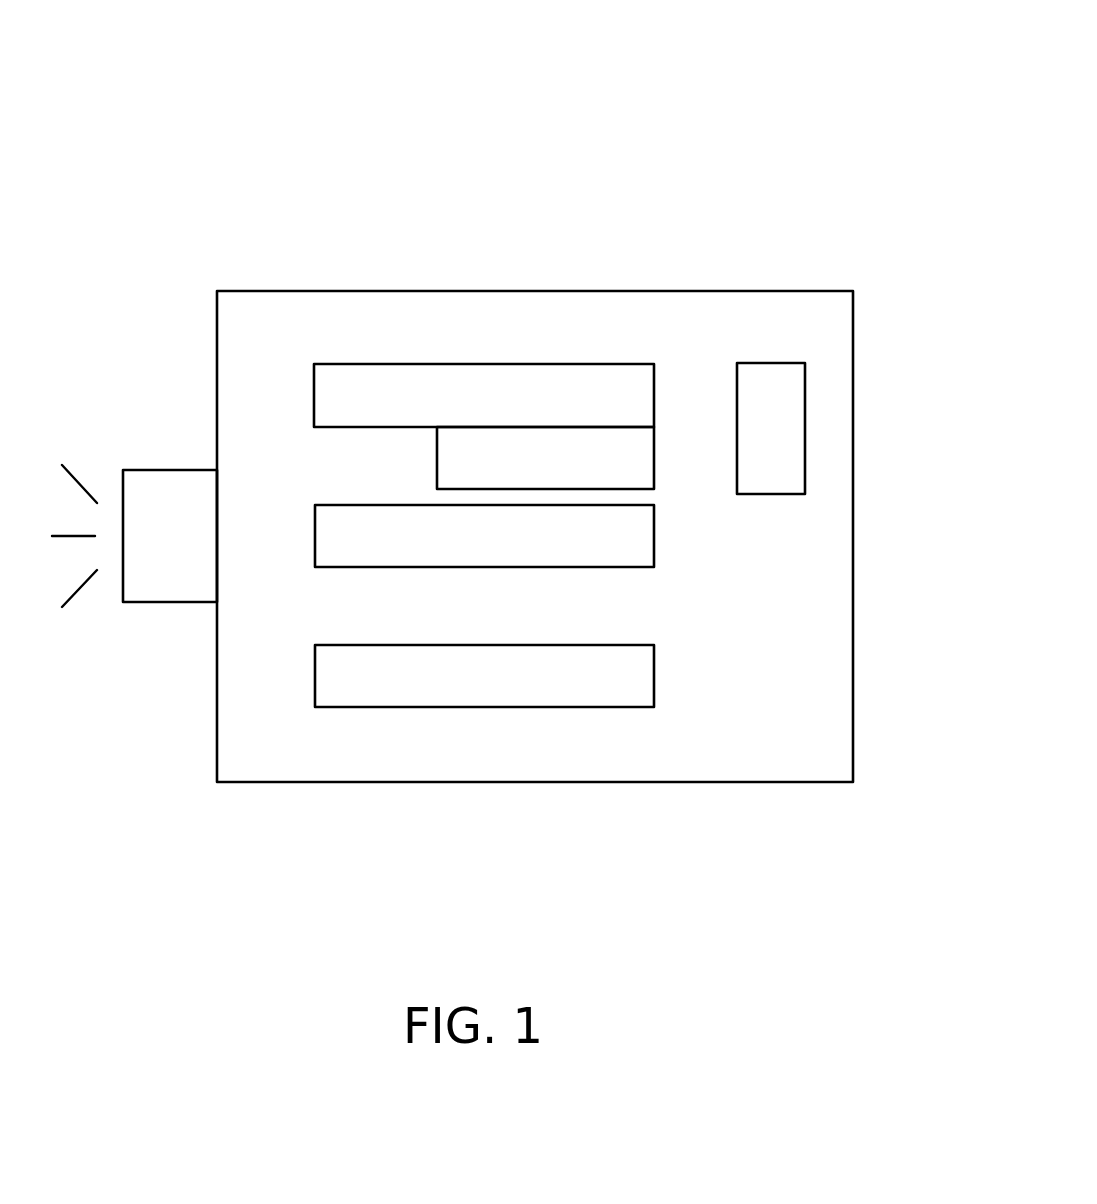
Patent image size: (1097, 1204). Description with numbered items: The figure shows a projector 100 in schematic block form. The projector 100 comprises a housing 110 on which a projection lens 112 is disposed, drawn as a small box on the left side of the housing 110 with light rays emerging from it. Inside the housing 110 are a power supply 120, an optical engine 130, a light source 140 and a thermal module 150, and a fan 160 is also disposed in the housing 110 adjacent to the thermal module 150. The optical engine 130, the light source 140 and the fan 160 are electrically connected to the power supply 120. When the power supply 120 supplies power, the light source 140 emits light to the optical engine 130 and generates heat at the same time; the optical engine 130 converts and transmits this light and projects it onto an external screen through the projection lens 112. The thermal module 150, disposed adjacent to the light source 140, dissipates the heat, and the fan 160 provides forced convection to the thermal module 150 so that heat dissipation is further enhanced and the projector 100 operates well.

The projector 100 is at (835, 88).
The housing 110 is at (770, 290).
The projection lens 112 is at (175, 470).
The power supply 120 is at (654, 675).
The optical engine 130 is at (654, 534).
The light source 140 is at (654, 458).
The thermal module 150 is at (603, 364).
The fan 160 is at (805, 428).